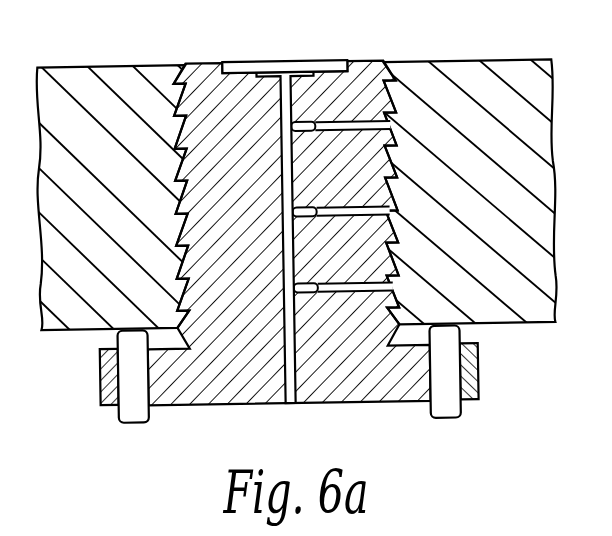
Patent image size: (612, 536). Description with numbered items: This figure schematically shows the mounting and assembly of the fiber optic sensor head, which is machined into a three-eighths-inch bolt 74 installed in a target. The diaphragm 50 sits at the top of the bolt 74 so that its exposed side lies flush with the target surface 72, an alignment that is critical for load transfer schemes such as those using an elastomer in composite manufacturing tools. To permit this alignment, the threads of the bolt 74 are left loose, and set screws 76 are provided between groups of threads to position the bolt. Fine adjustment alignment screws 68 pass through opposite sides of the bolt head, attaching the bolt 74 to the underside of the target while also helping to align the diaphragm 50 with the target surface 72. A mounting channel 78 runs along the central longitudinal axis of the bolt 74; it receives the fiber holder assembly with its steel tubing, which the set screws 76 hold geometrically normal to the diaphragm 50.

The diaphragm 50 is at (333, 61).
The fine adjustment alignment screws 68 is at (117, 417).
The target surface 72 is at (131, 66).
The bolt 74 is at (207, 73).
The set screws 76 is at (312, 282).
The mounting channel 78 is at (290, 404).